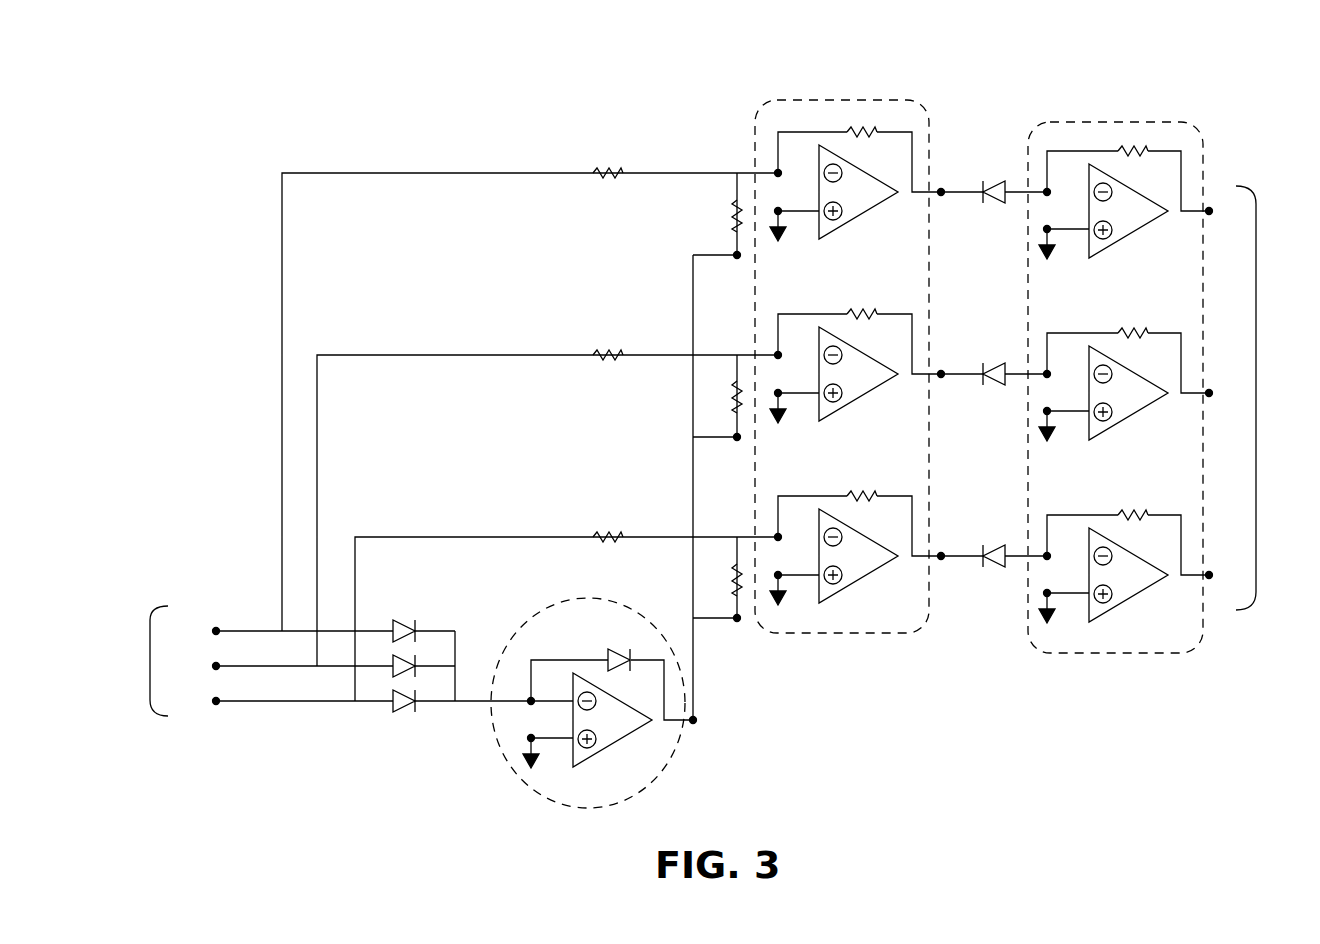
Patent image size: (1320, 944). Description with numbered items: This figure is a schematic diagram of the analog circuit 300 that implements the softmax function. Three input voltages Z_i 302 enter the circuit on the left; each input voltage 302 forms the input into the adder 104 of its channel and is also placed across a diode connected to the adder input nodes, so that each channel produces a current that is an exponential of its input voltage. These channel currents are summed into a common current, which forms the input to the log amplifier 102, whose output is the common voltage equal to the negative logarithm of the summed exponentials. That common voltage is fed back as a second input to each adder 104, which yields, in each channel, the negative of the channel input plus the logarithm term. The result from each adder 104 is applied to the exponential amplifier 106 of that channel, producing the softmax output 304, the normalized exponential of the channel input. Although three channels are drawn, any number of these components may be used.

The analog circuit 300 is at (234, 68).
The log amplifier 102 is at (629, 606).
The adder 104 is at (870, 100).
The exponential amplifier 106 is at (1144, 122).
The input voltage Z_i 302 is at (148, 670).
The softmax output 304 is at (1258, 394).